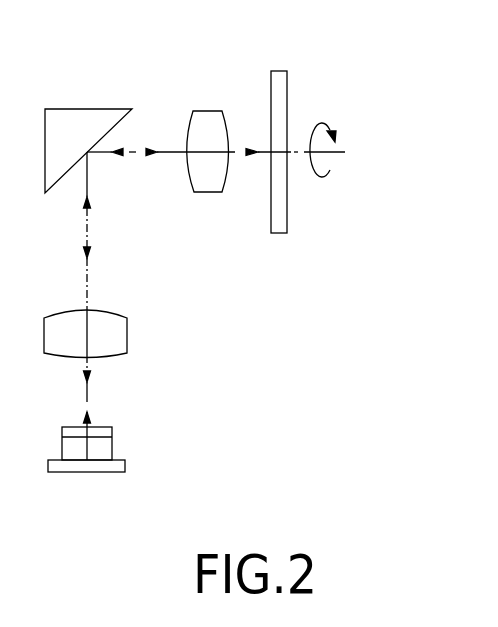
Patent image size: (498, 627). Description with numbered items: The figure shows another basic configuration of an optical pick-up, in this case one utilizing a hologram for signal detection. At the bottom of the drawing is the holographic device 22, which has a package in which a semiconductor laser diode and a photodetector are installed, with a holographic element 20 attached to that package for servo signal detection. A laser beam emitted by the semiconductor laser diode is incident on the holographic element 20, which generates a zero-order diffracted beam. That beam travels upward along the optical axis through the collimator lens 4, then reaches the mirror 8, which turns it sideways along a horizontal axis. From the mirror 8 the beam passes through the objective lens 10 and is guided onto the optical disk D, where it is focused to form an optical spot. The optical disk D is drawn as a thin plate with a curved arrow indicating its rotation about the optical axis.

The mirror 8 is at (82, 108).
The objective lens 10 is at (208, 110).
The optical disk D is at (278, 71).
The collimator lens 4 is at (127, 334).
The holographic element 20 is at (112, 428).
The holographic device 22 is at (110, 450).